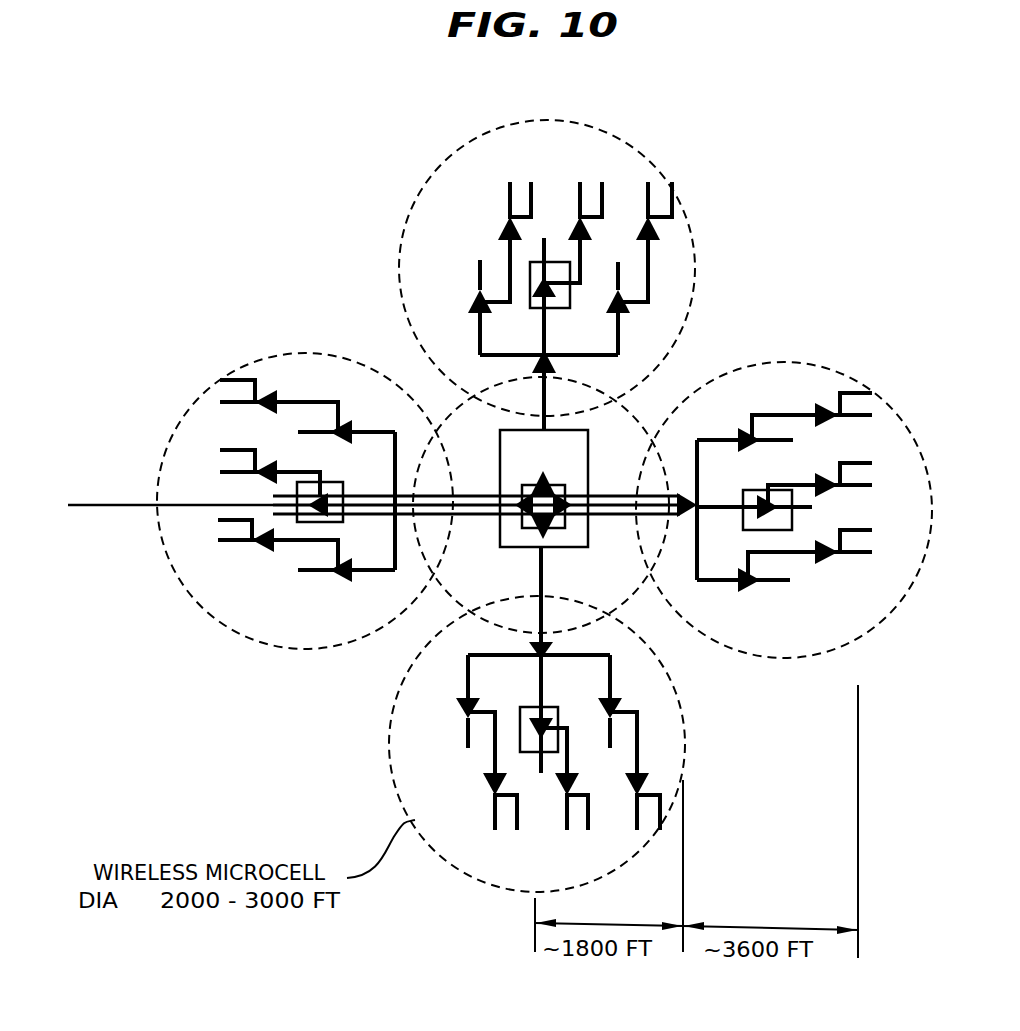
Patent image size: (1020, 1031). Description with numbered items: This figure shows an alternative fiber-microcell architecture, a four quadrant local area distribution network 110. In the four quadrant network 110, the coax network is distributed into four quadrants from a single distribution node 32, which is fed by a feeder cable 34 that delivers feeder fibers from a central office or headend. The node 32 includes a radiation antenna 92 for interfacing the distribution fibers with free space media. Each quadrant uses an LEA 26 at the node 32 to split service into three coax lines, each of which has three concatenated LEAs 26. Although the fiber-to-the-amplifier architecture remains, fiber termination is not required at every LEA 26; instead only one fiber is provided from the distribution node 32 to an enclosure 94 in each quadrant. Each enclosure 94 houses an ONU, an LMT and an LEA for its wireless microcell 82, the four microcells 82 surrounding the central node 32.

The four quadrant local area distribution network 110 is at (805, 210).
The microcell 82 is at (483, 137).
The distribution node 32 is at (590, 434).
The radiation antenna 92 is at (563, 546).
The feeder cable 34 is at (120, 507).
The enclosure 94 is at (538, 308).
The LEA 26 is at (502, 227).